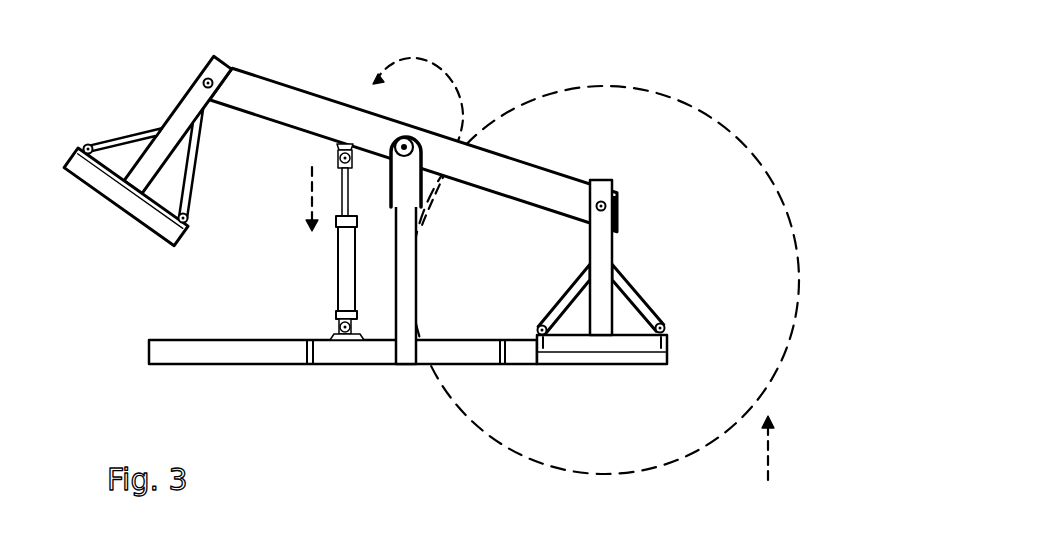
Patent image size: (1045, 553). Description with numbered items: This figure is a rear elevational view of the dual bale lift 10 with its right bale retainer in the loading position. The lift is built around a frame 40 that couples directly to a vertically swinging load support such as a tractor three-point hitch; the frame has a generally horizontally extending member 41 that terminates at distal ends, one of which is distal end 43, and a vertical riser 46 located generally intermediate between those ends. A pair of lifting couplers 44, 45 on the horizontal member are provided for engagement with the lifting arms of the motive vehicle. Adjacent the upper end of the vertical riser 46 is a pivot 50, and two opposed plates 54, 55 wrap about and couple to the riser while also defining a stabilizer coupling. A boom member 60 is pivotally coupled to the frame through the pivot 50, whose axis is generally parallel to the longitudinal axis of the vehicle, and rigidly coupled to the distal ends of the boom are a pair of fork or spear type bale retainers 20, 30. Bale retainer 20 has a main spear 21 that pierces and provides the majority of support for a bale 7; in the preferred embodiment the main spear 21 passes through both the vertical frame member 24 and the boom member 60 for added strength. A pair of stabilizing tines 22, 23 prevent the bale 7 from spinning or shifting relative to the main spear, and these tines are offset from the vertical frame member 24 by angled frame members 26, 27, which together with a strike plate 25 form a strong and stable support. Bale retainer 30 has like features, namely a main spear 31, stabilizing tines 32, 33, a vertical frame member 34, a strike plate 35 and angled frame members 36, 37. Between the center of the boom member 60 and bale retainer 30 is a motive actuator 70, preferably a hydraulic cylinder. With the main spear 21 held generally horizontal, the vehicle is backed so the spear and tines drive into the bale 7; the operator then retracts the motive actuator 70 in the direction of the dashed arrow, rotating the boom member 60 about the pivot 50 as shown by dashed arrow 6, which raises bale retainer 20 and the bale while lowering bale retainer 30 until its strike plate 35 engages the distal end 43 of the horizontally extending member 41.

The dual bale lift 10 is at (641, 40).
The dashed arrow 6 is at (438, 68).
The bale 7 is at (703, 110).
The bale retainer 20 is at (621, 269).
The main spear 21 is at (608, 205).
The stabilizing tine 22 is at (665, 326).
The stabilizing tine 23 is at (538, 327).
The vertical frame member 24 is at (609, 243).
The strike plate 25 is at (578, 355).
The angled frame member 26 is at (637, 300).
The angled frame member 27 is at (579, 290).
The bale retainer 30 is at (166, 113).
The main spear 31 is at (203, 79).
The stabilizing tine 32 is at (86, 145).
The stabilizing tine 33 is at (188, 214).
The vertical frame member 34 is at (192, 113).
The strike plate 35 is at (128, 212).
The angled frame member 36 is at (120, 137).
The angled frame member 37 is at (181, 183).
The frame 40 is at (272, 332).
The horizontally extending member 41 is at (345, 357).
The distal end 43 is at (152, 352).
The lifting coupler 44 is at (305, 352).
The lifting coupler 45 is at (500, 347).
The vertical riser 46 is at (409, 357).
The pivot 50 is at (393, 128).
The opposed plate 54 is at (429, 183).
The opposed plate 55 is at (392, 176).
The boom member 60 is at (268, 74).
The motive actuator 70 is at (338, 268).